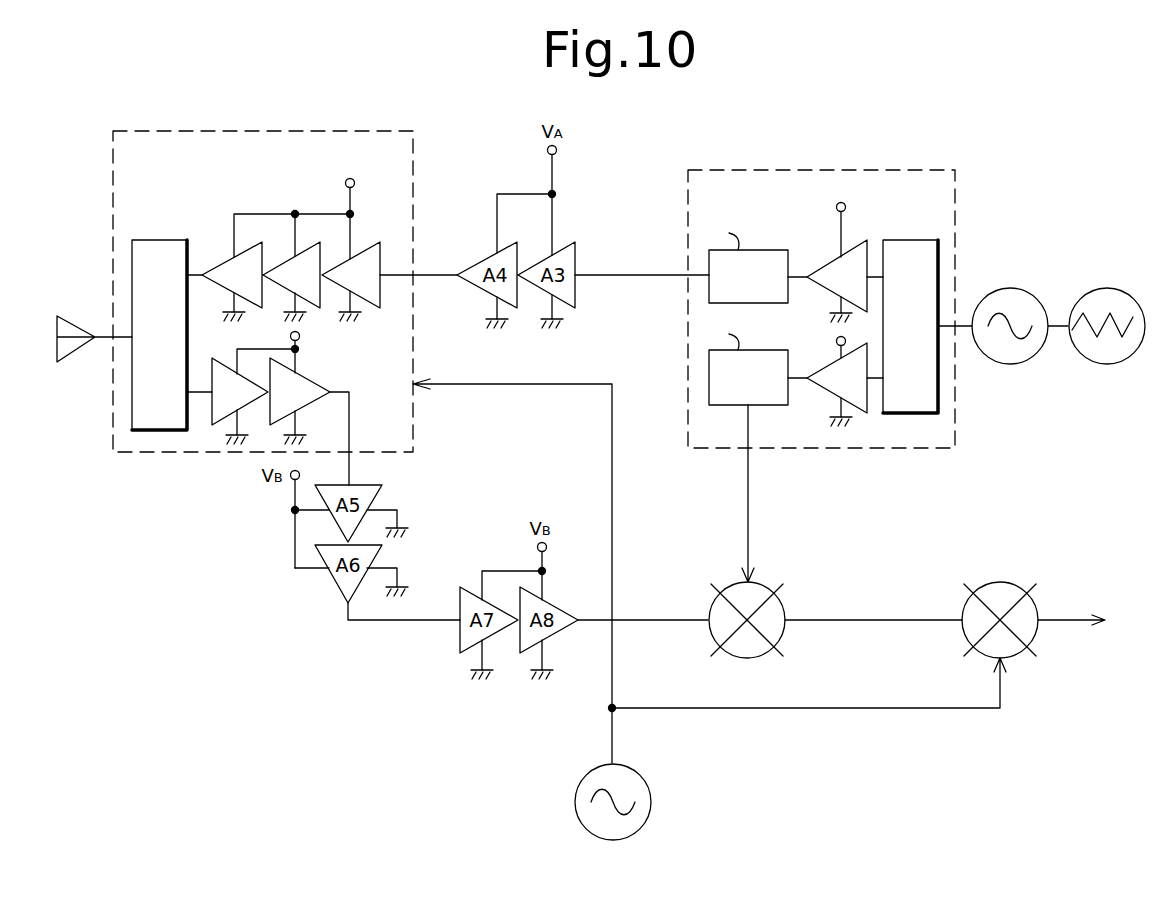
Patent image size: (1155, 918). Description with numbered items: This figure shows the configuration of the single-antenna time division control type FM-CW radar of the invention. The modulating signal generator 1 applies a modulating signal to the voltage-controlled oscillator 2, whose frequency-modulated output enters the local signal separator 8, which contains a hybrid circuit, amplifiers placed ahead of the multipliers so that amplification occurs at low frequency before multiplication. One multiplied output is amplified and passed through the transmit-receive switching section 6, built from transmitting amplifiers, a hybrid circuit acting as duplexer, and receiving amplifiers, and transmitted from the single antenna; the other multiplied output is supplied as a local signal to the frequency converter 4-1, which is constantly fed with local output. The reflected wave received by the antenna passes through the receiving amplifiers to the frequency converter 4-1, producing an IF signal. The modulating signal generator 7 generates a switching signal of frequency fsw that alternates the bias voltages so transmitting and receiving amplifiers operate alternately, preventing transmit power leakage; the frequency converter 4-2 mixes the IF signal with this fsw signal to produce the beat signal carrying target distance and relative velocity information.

The modulating signal generator 1 is at (1110, 290).
The voltage-controlled oscillator 2 is at (1018, 290).
The transmit-receive switching section 6 is at (413, 174).
The modulating signal generator 7 is at (641, 774).
The local signal separator 8 is at (918, 170).
The frequency converter 4-1 is at (757, 658).
The frequency converter 4-2 is at (1036, 640).